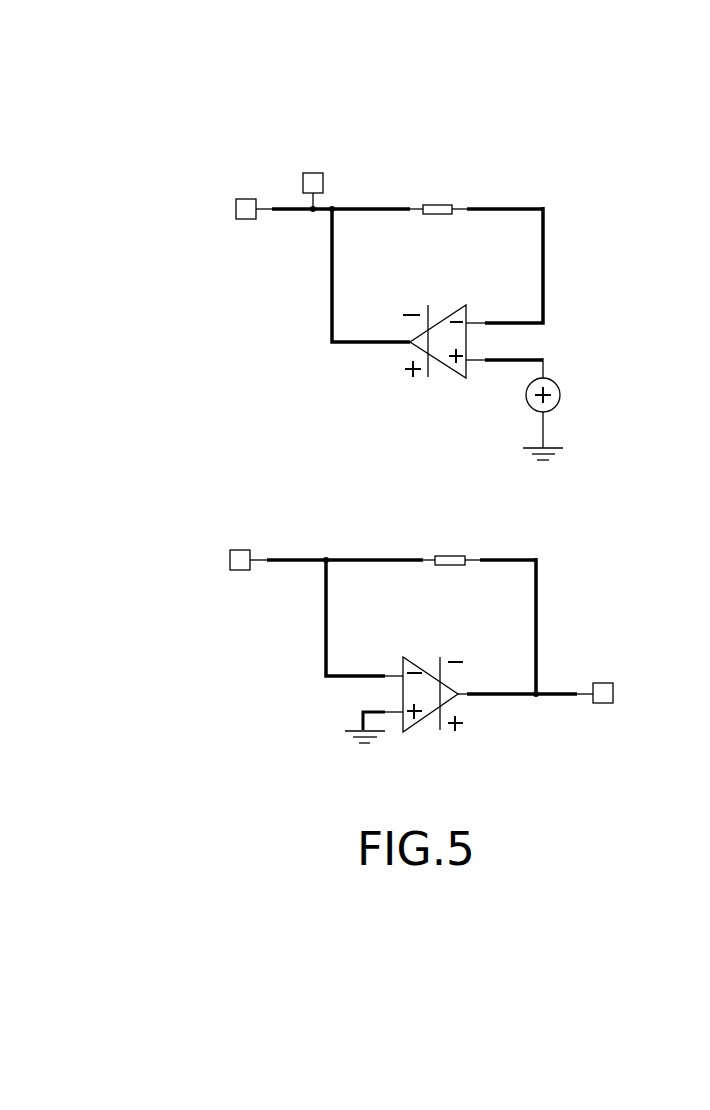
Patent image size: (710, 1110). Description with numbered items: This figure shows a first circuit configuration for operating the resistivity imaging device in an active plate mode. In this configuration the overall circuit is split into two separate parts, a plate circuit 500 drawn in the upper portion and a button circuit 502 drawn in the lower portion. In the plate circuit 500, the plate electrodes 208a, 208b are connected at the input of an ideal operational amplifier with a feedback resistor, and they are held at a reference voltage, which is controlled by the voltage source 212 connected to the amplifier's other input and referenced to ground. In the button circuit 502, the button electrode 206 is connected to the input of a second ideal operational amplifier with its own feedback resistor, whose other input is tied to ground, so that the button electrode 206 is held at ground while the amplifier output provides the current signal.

The plate circuit 500 is at (197, 146).
The button circuit 502 is at (208, 492).
The plate electrode 208a is at (177, 239).
The plate electrode 208b is at (247, 220).
The button electrode 206 is at (238, 573).
The voltage source 212 is at (553, 410).